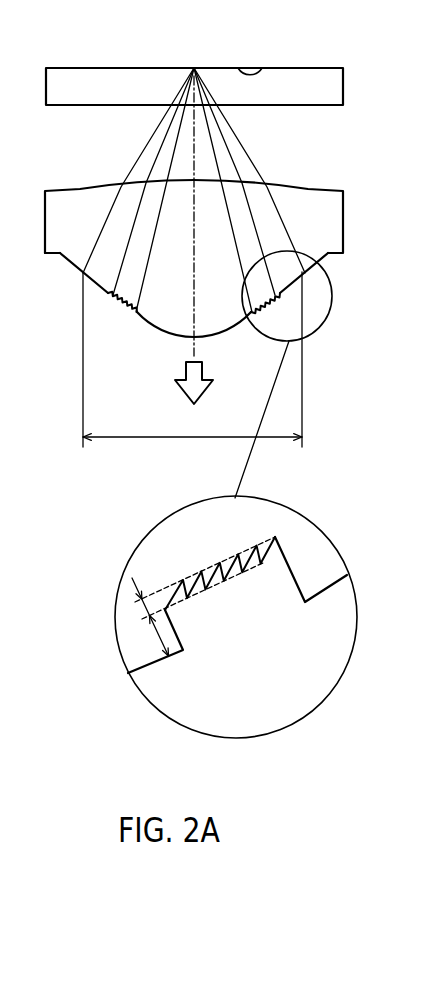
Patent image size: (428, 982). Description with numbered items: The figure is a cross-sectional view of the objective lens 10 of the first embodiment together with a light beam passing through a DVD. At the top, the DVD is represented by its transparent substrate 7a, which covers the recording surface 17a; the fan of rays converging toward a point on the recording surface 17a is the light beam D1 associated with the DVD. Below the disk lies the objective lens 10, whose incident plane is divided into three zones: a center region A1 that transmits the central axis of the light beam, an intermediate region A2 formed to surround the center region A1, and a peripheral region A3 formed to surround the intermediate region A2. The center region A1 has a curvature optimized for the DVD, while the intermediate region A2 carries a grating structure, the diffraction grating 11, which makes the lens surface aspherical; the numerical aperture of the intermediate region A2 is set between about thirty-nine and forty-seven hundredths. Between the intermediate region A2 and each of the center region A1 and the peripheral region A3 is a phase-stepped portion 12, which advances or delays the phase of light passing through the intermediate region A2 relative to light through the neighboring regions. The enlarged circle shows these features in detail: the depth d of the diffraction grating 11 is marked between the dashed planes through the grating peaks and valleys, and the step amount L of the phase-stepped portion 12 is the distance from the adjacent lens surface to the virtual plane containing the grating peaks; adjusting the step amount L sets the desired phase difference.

The transparent substrate 7a is at (137, 80).
The recording surface 17a is at (262, 68).
The objective lens 10 is at (343, 218).
The center region A1 is at (160, 348).
The intermediate region A2 is at (118, 308).
The peripheral region A3 is at (88, 297).
The light beam reflected on DVD recording surface D1 is at (192, 359).
The diffraction grating 11 is at (228, 582).
The phase-stepped portion 12 is at (187, 640).
The depth of the diffraction grating d is at (201, 583).
The step amount L is at (155, 638).